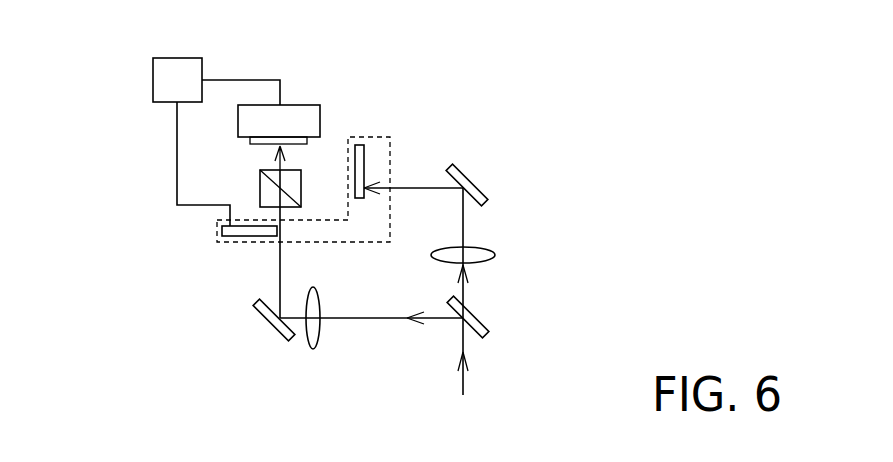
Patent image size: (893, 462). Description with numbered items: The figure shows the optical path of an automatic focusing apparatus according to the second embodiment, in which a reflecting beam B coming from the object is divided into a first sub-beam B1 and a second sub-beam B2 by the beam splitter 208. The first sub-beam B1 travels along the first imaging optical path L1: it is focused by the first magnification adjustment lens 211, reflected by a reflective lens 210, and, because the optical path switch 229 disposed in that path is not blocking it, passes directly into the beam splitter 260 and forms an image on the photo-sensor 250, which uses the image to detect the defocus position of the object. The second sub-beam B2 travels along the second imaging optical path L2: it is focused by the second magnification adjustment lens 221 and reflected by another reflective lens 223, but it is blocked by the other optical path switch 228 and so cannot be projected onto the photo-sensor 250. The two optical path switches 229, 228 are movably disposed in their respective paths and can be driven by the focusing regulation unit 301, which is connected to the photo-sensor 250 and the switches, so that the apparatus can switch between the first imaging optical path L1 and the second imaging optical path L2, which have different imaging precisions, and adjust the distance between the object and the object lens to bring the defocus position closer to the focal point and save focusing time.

The focusing regulation unit 301 is at (153, 80).
The photo-sensor 250 is at (312, 122).
The beam splitter 260 is at (263, 191).
The optical path switch 229 is at (222, 232).
The optical path switch 228 is at (362, 158).
The reflective lens 223 is at (472, 190).
The second magnification adjustment lens 221 is at (494, 256).
The first imaging optical path L1 is at (280, 270).
The second imaging optical path L2 is at (465, 226).
The reflective lens 210 is at (263, 302).
The first magnification adjustment lens 211 is at (313, 349).
The beam splitter 208 is at (452, 306).
The first sub-beam B1 is at (371, 334).
The second sub-beam B2 is at (483, 282).
The reflecting beam B is at (475, 370).